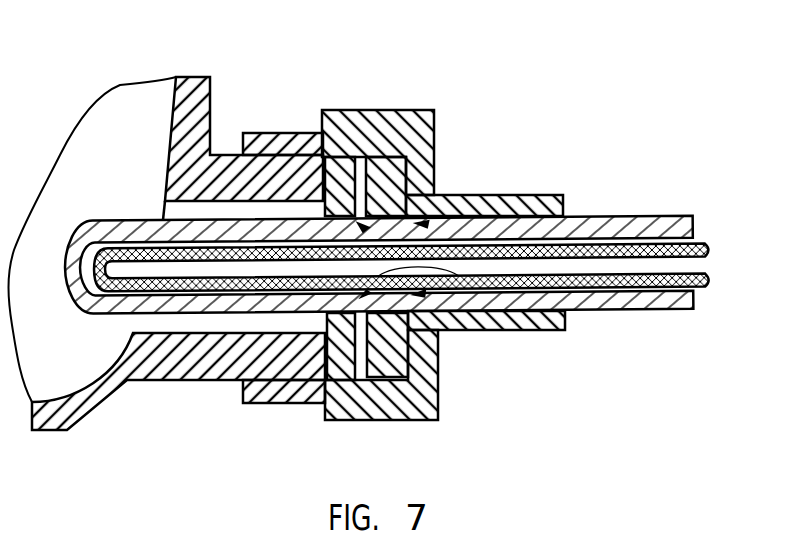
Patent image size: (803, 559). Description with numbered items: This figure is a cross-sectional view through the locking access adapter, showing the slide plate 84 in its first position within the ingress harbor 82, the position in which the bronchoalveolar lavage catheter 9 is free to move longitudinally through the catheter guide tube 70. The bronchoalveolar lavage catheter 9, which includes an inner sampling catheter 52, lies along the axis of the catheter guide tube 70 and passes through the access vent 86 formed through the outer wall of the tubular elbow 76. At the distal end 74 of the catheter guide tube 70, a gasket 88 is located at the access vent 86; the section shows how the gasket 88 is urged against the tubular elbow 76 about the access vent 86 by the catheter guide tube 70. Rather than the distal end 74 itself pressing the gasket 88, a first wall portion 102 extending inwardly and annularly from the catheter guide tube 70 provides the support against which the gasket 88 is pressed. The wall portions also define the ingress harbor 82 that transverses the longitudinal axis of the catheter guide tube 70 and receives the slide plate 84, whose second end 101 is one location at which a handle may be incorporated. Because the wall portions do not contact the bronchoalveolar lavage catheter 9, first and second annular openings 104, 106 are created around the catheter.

The bronchoalveolar lavage catheter 9 is at (630, 216).
The inner sampling catheter 52 is at (697, 288).
The catheter guide tube 70 is at (443, 252).
The distal end 74 is at (437, 116).
The tubular elbow 76 is at (191, 78).
The ingress harbor 82 is at (425, 206).
The slide plate 84 is at (393, 174).
The access vent 86 is at (218, 210).
The gasket 88 is at (330, 172).
The second end 101 is at (357, 178).
The first wall portion 102 is at (427, 178).
The first annular opening 104 is at (552, 226).
The second annular opening 106 is at (547, 198).